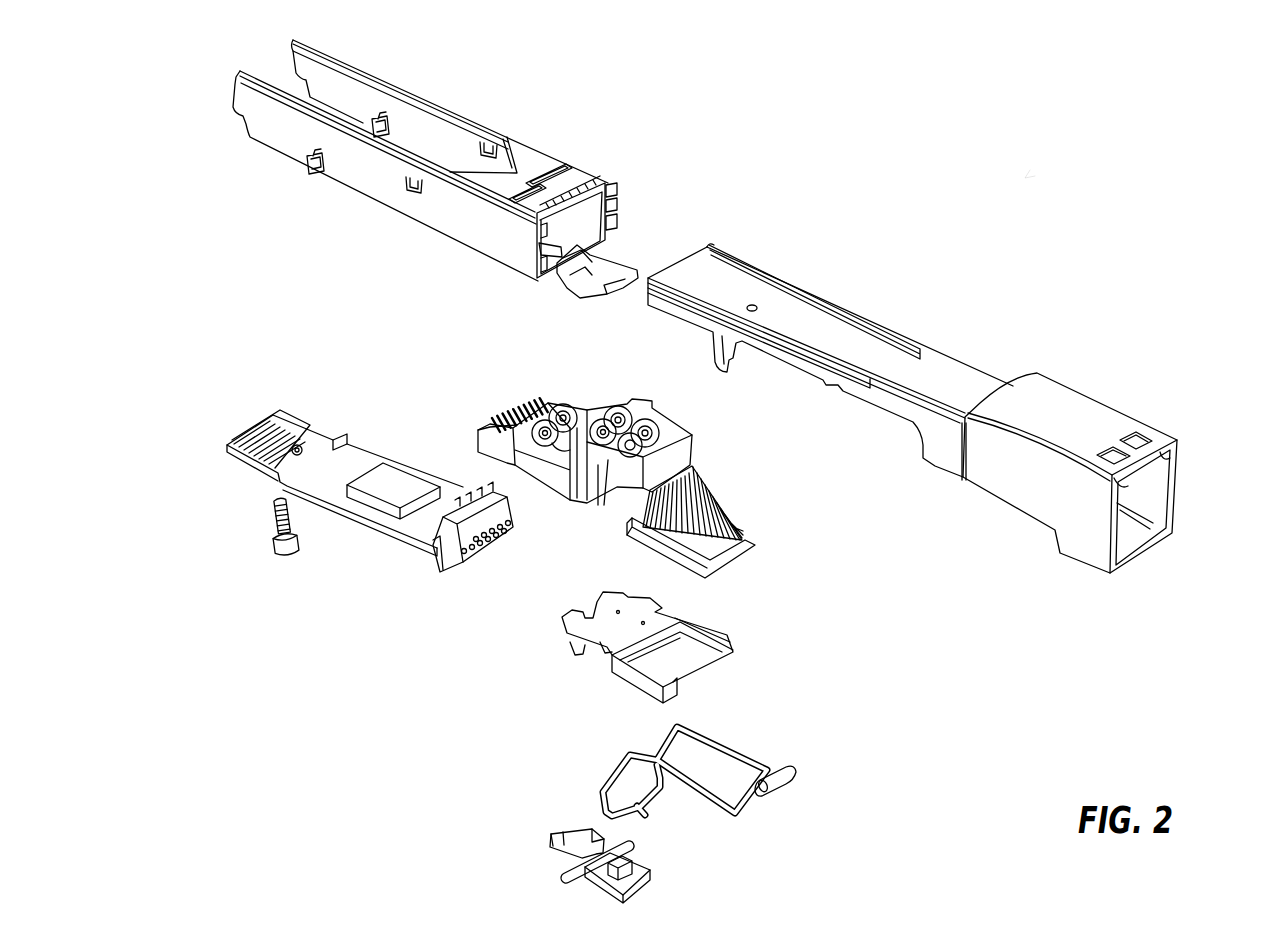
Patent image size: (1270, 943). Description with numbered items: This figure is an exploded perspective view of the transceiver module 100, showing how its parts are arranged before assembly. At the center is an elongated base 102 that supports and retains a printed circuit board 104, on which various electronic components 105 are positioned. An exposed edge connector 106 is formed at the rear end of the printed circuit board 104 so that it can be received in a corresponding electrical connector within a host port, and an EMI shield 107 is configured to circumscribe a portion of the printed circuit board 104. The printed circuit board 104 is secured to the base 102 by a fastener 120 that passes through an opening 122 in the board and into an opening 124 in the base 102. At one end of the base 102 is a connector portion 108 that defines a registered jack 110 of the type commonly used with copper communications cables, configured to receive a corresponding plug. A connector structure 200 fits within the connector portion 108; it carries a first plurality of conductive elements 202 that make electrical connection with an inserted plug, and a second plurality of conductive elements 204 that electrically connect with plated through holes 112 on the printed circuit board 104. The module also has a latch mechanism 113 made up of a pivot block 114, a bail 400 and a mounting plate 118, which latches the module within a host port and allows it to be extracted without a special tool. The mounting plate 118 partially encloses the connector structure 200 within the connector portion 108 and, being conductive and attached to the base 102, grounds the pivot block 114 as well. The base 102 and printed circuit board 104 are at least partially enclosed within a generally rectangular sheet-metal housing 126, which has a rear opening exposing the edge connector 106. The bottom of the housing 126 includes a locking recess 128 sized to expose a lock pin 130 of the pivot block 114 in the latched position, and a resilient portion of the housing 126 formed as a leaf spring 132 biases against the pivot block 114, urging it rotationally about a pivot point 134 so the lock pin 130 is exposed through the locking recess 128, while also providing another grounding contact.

The transceiver module 100 is at (1025, 177).
The base 102 is at (840, 416).
The printed circuit board 104 is at (360, 537).
The electronic components 105 is at (375, 477).
The edge connector 106 is at (212, 450).
The EMI shield 107 is at (435, 582).
The connector portion 108 is at (1050, 360).
The RJ-45 jack 110 is at (1147, 490).
The plated through holes 112 is at (463, 572).
The latch mechanism 113 is at (798, 643).
The pivot block 114 is at (643, 867).
The mounting plate 118 is at (625, 673).
The fastener 120 is at (270, 528).
The opening 122 is at (297, 446).
The opening 124 is at (753, 303).
The housing 126 is at (370, 212).
The locking recess 128 is at (555, 250).
The lock pin 130 is at (580, 850).
The leaf spring 132 is at (607, 283).
The pivot point 134 is at (577, 873).
The connector structure 200 is at (597, 517).
The first plurality of conductive elements 202 is at (718, 573).
The second plurality of conductive elements 204 is at (550, 385).
The bail 400 is at (730, 737).